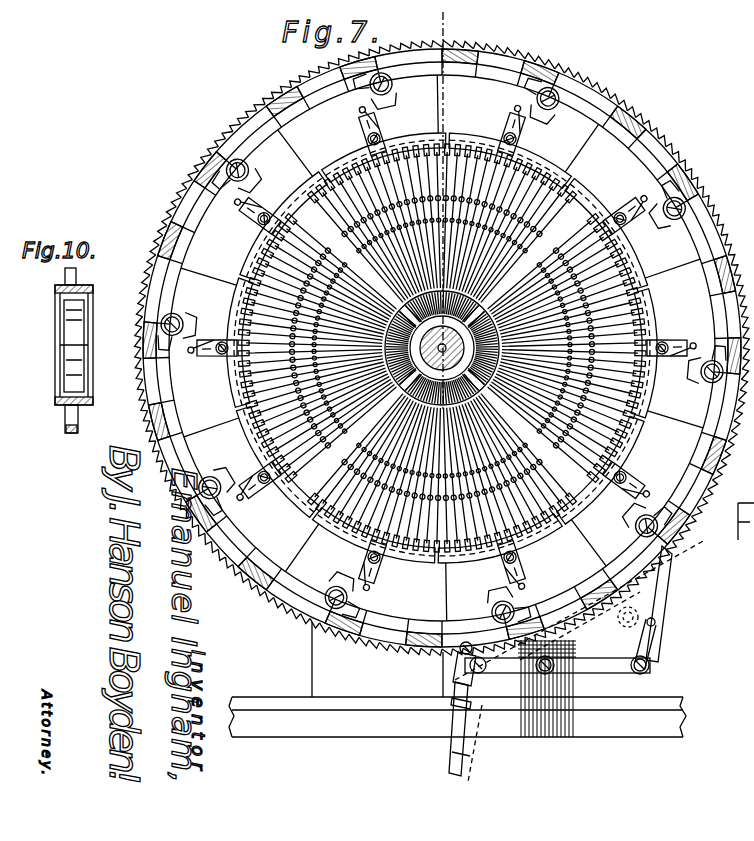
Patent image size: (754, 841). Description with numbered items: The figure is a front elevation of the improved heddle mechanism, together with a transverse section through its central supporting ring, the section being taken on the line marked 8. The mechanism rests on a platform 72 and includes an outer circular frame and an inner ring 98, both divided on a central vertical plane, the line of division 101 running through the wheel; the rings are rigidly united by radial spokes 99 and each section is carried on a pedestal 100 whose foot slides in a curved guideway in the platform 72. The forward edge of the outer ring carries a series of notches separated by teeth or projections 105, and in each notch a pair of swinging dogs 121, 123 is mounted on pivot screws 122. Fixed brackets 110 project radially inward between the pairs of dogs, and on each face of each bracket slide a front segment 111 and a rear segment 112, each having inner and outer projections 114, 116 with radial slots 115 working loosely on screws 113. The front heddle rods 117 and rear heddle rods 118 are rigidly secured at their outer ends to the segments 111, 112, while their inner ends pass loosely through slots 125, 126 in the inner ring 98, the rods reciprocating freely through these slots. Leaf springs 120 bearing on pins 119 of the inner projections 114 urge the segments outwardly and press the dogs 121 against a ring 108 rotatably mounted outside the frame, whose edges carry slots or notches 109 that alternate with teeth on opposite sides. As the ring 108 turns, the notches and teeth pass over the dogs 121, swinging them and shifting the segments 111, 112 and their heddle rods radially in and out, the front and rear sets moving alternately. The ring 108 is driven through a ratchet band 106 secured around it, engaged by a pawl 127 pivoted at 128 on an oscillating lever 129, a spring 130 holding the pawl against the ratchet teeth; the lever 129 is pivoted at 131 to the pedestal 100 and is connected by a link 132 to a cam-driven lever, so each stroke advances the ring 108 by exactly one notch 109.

In FIG. 7, the section line 8 is at (433, 12).
In FIG. 7, the platform 72 is at (457, 698).
In FIG. 10, the inner ring 98 is at (90, 284).
In FIG. 7, the radial spokes 99 is at (403, 339).
In FIG. 10, the radial spokes 99 is at (80, 420).
In FIG. 7, the pedestal 100 is at (310, 656).
In FIG. 7, the line of division 101 is at (440, 686).
In FIG. 7, the teeth or projections 105 is at (442, 346).
In FIG. 7, the ratchet band 106 is at (442, 338).
In FIG. 7, the ring 108 is at (493, 79).
In FIG. 7, the slots or notches 109 is at (377, 379).
In FIG. 7, the fixed brackets 110 is at (604, 247).
In FIG. 7, the front segment 111 is at (511, 158).
In FIG. 7, the rear segment 112 is at (385, 145).
In FIG. 7, the screws 113 is at (623, 196).
In FIG. 7, the inner projections 114 is at (510, 109).
In FIG. 7, the radial slots 115 is at (542, 134).
In FIG. 7, the outer projections 116 is at (465, 190).
In FIG. 7, the front heddle rods 117 is at (447, 343).
In FIG. 7, the rear heddle rods 118 is at (188, 47).
In FIG. 7, the pins 119 is at (667, 247).
In FIG. 7, the leaf springs 120 is at (683, 286).
In FIG. 7, the swinging dogs 121 is at (554, 85).
In FIG. 7, the pivot screws 122 is at (442, 348).
In FIG. 7, the swinging dog 123 is at (619, 130).
In FIG. 10, the slots 125 is at (62, 365).
In FIG. 10, the slots 126 is at (92, 345).
In FIG. 7, the pawl 127 is at (662, 606).
In FIG. 7, the pawl pivot 128 is at (650, 670).
In FIG. 7, the oscillating lever 129 is at (626, 668).
In FIG. 7, the spring 130 is at (656, 644).
In FIG. 7, the lever pivot 131 is at (570, 676).
In FIG. 7, the link 132 is at (458, 704).